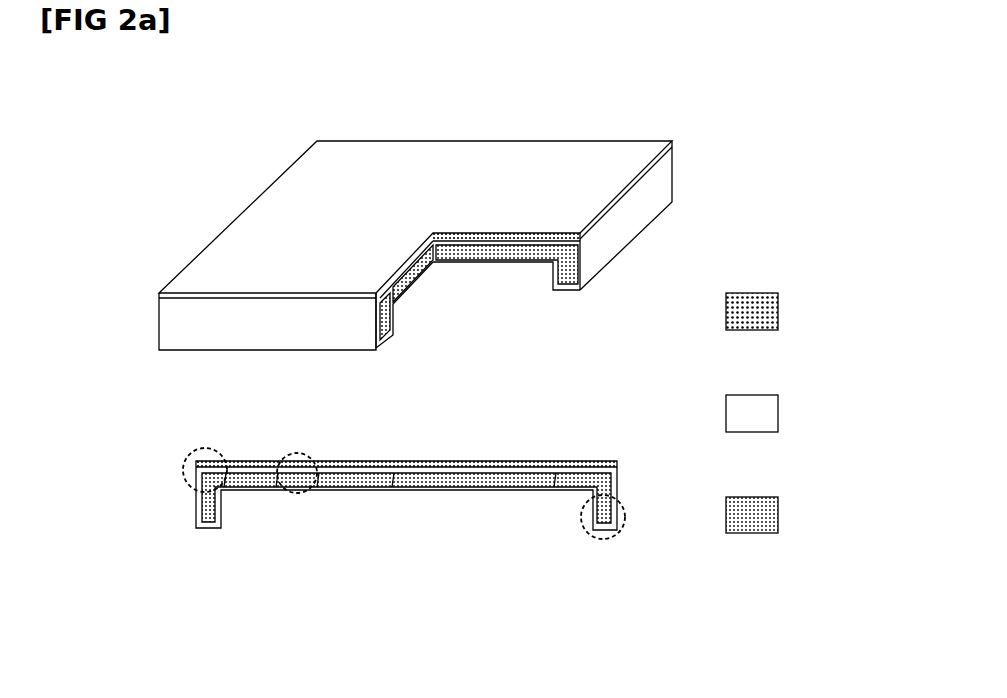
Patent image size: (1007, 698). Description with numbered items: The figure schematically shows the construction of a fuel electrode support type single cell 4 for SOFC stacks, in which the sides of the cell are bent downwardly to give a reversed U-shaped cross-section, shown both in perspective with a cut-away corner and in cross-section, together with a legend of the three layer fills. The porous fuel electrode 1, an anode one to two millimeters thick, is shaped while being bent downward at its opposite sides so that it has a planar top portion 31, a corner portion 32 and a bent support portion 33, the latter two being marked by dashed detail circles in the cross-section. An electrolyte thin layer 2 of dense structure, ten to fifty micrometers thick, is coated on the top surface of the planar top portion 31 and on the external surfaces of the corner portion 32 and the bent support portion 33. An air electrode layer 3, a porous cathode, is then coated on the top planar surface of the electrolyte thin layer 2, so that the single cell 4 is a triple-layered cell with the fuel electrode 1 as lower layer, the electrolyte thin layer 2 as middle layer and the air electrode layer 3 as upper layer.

The fuel electrode 1 is at (483, 253).
The electrolyte thin layer 2 is at (183, 322).
The air electrode layer 3 is at (230, 248).
The fuel electrode support type single cell 4 is at (236, 164).
The planar top portion 31 is at (293, 448).
The corner portion 32 is at (180, 465).
The bent support portion 33 is at (605, 540).